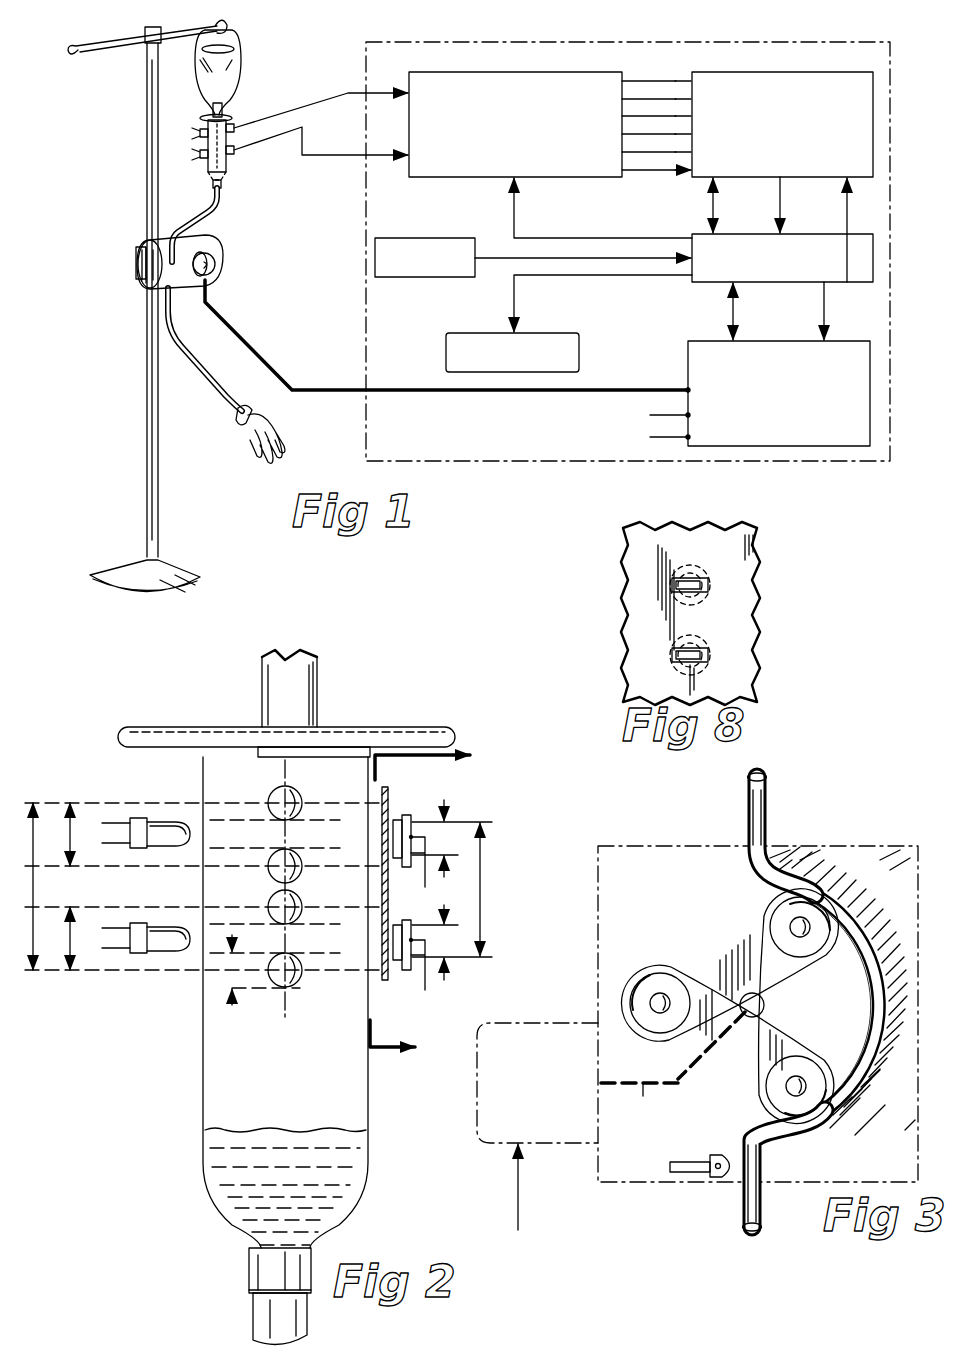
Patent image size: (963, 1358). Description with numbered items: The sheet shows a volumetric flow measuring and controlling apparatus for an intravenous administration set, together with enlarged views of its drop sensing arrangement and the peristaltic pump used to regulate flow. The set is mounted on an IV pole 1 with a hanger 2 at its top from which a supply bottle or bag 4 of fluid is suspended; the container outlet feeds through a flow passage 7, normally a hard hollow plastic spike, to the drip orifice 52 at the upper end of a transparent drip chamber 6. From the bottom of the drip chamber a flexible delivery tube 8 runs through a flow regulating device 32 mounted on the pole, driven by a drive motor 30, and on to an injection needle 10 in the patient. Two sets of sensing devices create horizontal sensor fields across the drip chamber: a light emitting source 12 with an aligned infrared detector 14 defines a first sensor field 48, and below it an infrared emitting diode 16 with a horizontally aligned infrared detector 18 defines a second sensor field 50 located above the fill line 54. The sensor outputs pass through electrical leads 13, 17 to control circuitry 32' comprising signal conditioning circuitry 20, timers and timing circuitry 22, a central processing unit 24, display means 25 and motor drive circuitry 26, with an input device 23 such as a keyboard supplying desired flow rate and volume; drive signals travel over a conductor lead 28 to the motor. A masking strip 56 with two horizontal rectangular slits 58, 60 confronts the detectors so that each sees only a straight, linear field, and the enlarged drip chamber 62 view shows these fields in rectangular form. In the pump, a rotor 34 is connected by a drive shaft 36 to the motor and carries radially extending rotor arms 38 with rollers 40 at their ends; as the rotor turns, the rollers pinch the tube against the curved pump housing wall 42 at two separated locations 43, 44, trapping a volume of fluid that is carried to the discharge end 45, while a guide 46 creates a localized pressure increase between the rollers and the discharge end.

In FIG. 1, the IV pole 1 is at (147, 420).
In FIG. 1, the hanger 2 is at (100, 46).
In FIG. 1, the supply bottle or bag 4 is at (240, 52).
In FIG. 1, the drip chamber 6 is at (236, 166).
In FIG. 1, the flow passage 7 is at (206, 118).
In FIG. 2, the flow passage 7 is at (318, 672).
In FIG. 1, the flexible delivery tube 8 is at (215, 200).
In FIG. 2, the flexible delivery tube 8 is at (268, 1311).
In FIG. 3, the flexible delivery tube 8 is at (768, 801).
In FIG. 1, the injection needle 10 is at (250, 413).
In FIG. 1, the light emitting source 12 is at (198, 133).
In FIG. 2, the light emitting source 12 is at (164, 827).
In FIG. 1, the electrical lead 13 is at (320, 102).
In FIG. 2, the electrical lead 13 is at (413, 913).
In FIG. 1, the infrared detector 14 is at (236, 127).
In FIG. 8, the infrared detector 14 is at (672, 585).
In FIG. 2, the infrared detector 14 is at (411, 815).
In FIG. 1, the infrared emitting diode 16 is at (200, 158).
In FIG. 2, the infrared emitting diode 16 is at (166, 948).
In FIG. 1, the electrical lead 17 is at (330, 158).
In FIG. 2, the electrical lead 17 is at (427, 1019).
In FIG. 1, the infrared detector 18 is at (236, 151).
In FIG. 8, the infrared detector 18 is at (672, 655).
In FIG. 2, the infrared detector 18 is at (402, 972).
In FIG. 1, the signal conditioning circuitry 20 is at (428, 178).
In FIG. 1, the timers and timing circuitry 22 is at (690, 178).
In FIG. 1, the input device 23 is at (413, 277).
In FIG. 1, the central processing unit 24 is at (698, 284).
In FIG. 1, the flow volume and data setting and display means 25 is at (445, 356).
In FIG. 1, the motor drive circuitry 26 is at (688, 358).
In FIG. 1, the conductor lead 28 is at (453, 392).
In FIG. 3, the conductor lead 28 is at (520, 1215).
In FIG. 1, the drive motor 30 is at (214, 266).
In FIG. 3, the drive motor 30 is at (482, 1143).
In FIG. 1, the flow regulating device 32 is at (207, 251).
In FIG. 3, the flow regulating device 32 is at (734, 987).
In FIG. 1, the control circuitry 32' is at (628, 230).
In FIG. 3, the rotor 34 is at (696, 1040).
In FIG. 3, the drive shaft 36 is at (671, 1069).
In FIG. 3, the rotor arms 38 is at (783, 913).
In FIG. 3, the rollers 40 is at (782, 903).
In FIG. 3, the curved pump housing wall 42 is at (887, 1007).
In FIG. 3, the crimp location 43 is at (830, 888).
In FIG. 3, the crimp location 44 is at (831, 1121).
In FIG. 3, the discharge end 45 is at (737, 1183).
In FIG. 3, the guide 46 is at (692, 1162).
In FIG. 2, the first sensor field 48 is at (345, 816).
In FIG. 2, the second sensor field 50 is at (345, 920).
In FIG. 2, the drip orifice 52 is at (268, 757).
In FIG. 2, the fill line 54 is at (240, 1130).
In FIG. 8, the masking strip 56 is at (640, 554).
In FIG. 2, the masking strip 56 is at (388, 793).
In FIG. 8, the slit 58 is at (710, 581).
In FIG. 2, the slit 58 is at (383, 850).
In FIG. 8, the slit 60 is at (710, 654).
In FIG. 2, the slit 60 is at (383, 952).
In FIG. 2, the drip chamber 62 is at (184, 1038).